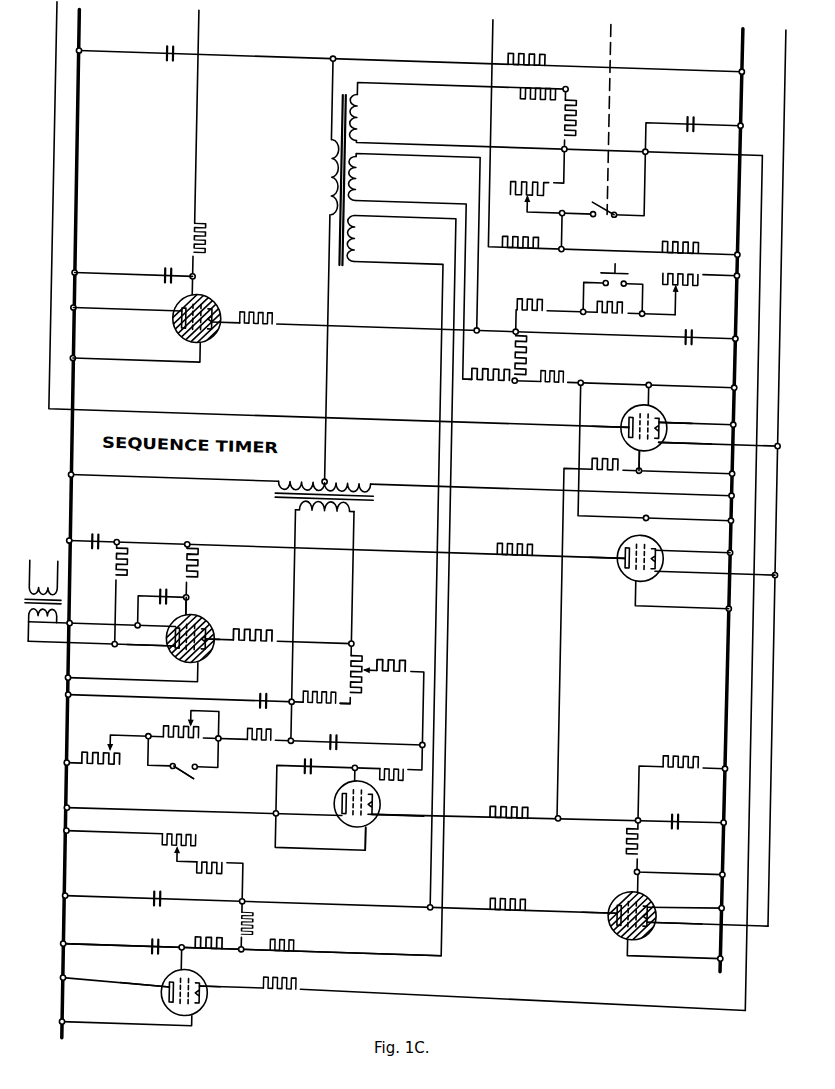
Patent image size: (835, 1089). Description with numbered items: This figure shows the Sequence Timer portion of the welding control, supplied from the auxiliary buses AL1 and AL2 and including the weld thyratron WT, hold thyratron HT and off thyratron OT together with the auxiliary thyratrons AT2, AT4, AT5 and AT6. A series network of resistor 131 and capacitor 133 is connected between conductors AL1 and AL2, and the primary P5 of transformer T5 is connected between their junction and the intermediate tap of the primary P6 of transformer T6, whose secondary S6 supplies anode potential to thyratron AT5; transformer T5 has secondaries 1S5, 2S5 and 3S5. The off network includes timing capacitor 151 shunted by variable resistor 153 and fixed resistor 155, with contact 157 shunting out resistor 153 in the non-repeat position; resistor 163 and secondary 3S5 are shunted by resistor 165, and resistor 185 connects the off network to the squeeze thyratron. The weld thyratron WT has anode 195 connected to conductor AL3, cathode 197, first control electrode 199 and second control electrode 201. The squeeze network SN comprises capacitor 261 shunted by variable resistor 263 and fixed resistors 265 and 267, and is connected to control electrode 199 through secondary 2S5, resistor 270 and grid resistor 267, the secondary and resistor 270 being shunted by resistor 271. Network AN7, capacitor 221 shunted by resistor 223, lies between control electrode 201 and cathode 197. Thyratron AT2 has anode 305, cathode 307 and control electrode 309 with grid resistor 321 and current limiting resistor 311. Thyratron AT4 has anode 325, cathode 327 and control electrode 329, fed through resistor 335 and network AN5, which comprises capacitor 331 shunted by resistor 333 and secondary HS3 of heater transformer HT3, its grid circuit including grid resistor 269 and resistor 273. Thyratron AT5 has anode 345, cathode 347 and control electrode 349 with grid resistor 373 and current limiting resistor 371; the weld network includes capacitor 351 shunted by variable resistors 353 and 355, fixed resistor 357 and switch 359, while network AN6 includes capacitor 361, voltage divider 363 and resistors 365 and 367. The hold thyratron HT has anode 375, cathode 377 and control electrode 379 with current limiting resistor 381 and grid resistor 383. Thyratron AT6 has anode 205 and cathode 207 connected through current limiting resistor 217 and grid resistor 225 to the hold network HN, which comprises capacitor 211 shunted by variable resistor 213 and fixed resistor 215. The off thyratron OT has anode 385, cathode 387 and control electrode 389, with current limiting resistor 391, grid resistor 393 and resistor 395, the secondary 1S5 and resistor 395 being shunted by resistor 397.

The capacitor 133 is at (166, 52).
The resistor 131 is at (546, 42).
The resistor 163 is at (542, 85).
The third resistor 165 is at (565, 114).
The variable resistor 153 is at (545, 159).
The resistor 185 is at (539, 236).
The timing capacitor 151 is at (688, 96).
The contact of repeat-non-repeat switch 157 is at (600, 222).
The fixed resistor 155 is at (689, 222).
The variable resistor 263 is at (669, 253).
The fixed resistor 265 is at (619, 297).
The grid resistor 267 is at (552, 279).
The capacitor 261 is at (691, 323).
The resistor 271 is at (535, 337).
The grid resistor 269 is at (571, 360).
The resistor 270 is at (485, 373).
The grid resistor 321 is at (205, 217).
The control electrode 309 is at (180, 303).
The cathode 307 is at (182, 318).
The anode 305 is at (220, 330).
The current limiting resistor 311 is at (259, 305).
The anode 195 is at (634, 405).
The first control electrode 199 is at (663, 400).
The second control electrode 201 is at (634, 425).
The cathode 197 is at (669, 426).
The resistor 273 is at (610, 453).
The anode 325 is at (630, 535).
The control electrode 329 is at (664, 533).
The cathode 327 is at (672, 558).
The current limiting resistor 335 is at (540, 521).
The capacitor 331 is at (102, 533).
The fixed resistor 333 is at (139, 558).
The grid resistor 373 is at (209, 558).
The control electrode 349 is at (195, 618).
The cathode 347 is at (184, 645).
The anode 345 is at (223, 644).
The current limiting resistor 371 is at (253, 624).
The capacitor 351 is at (274, 686).
The voltage divider 363 is at (370, 646).
The resistor 365 is at (399, 653).
The resistor 367 is at (344, 685).
The variable resistor 355 is at (183, 719).
The fixed resistor 357 is at (279, 739).
The variable resistor 353 is at (137, 764).
The switch 359 is at (194, 776).
The capacitor 361 is at (352, 733).
The grid resistor 383 is at (406, 755).
The cathode 377 is at (357, 788).
The anode 375 is at (392, 797).
The control electrode 379 is at (361, 811).
The current limiting resistor 381 is at (526, 786).
The variable resistor 213 is at (213, 830).
The fixed resistor 215 is at (233, 855).
The capacitor 211 is at (170, 888).
The resistor 397 is at (272, 915).
The grid resistor 393 is at (230, 927).
The resistor 395 is at (308, 935).
The current limiting resistor 391 is at (307, 976).
The control electrode 389 is at (183, 974).
The cathode 387 is at (188, 992).
The anode 385 is at (226, 995).
The resistor 223 is at (693, 725).
The grid resistor 225 is at (644, 824).
The capacitor 221 is at (695, 807).
The anode 205 is at (630, 897).
The cathode 207 is at (669, 907).
The current limiting resistor 217 is at (510, 879).
The auxiliary bus AL1 is at (81, 190).
The auxiliary bus AL2 is at (739, 646).
The conductor AL3 is at (57, 407).
The auxiliary thyratron AT2 is at (212, 290).
The auxiliary thyratron AT4 is at (628, 571).
The auxiliary thyratron AT5 is at (213, 657).
The auxiliary thyratron AT6 is at (637, 874).
The weld thyratron WT is at (639, 393).
The hold thyratron HT is at (390, 822).
The off thyratron OT is at (220, 968).
The transformer T5 is at (347, 256).
The primary P5 is at (332, 170).
The secondary 1S5 is at (360, 234).
The secondary 2S5 is at (361, 176).
The secondary 3S5 is at (362, 116).
The primary P6 is at (344, 474).
The secondary S6 is at (344, 502).
The transformer T6 is at (382, 490).
The transformer HT3 is at (52, 583).
The secondary HS3 is at (54, 624).
The squeeze network SN is at (722, 296).
The auxiliary time constant network AN5 is at (122, 591).
The auxiliary time constant network AN6 is at (416, 702).
The auxiliary time constant network AN7 is at (706, 778).
The hold network HN is at (184, 868).